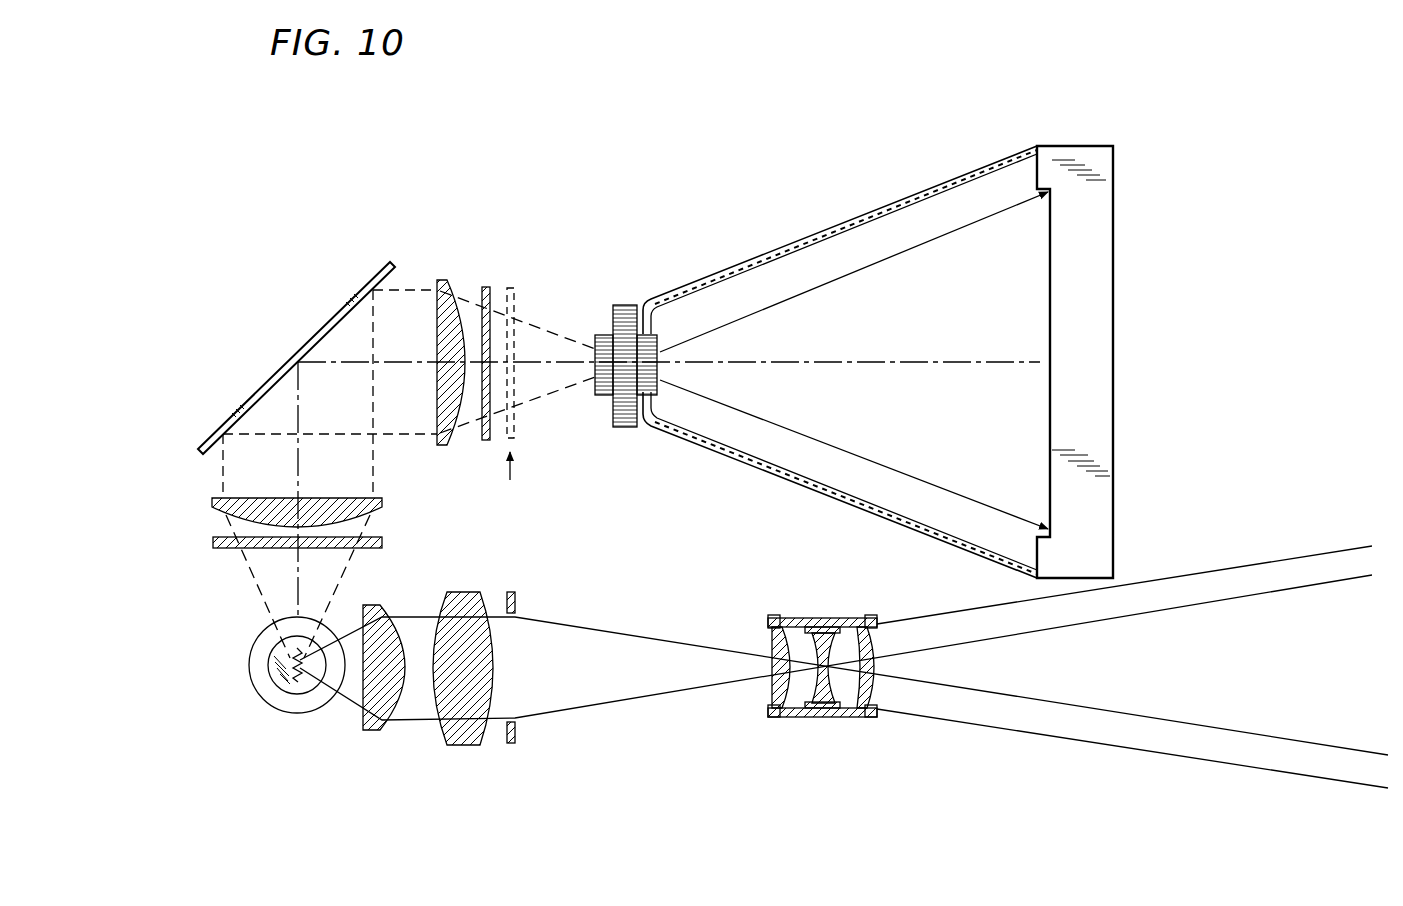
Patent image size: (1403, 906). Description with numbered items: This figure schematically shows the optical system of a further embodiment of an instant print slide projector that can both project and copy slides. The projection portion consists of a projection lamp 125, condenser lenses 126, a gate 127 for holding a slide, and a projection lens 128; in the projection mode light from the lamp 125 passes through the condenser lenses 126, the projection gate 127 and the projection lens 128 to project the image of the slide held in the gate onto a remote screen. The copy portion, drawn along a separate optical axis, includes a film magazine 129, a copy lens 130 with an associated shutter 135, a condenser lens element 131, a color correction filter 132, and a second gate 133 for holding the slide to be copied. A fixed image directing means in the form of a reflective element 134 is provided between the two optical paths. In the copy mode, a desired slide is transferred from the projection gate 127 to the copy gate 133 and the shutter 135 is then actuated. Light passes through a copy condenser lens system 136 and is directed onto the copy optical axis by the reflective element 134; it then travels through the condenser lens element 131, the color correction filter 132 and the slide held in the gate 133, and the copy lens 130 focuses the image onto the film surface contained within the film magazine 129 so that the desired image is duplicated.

The projection lamp 125 is at (292, 695).
The condenser lenses 126 is at (450, 733).
The gate 127 is at (522, 722).
The projection lens 128 is at (822, 718).
The film magazine 129 is at (1113, 336).
The copy lens 130 is at (628, 305).
The condenser lens element 131 is at (447, 285).
The color correction filter 132 is at (487, 287).
The gate 133 is at (516, 419).
The reflective element 134 is at (313, 342).
The shutter 135 is at (605, 333).
The copy condenser lens system 136 is at (220, 520).